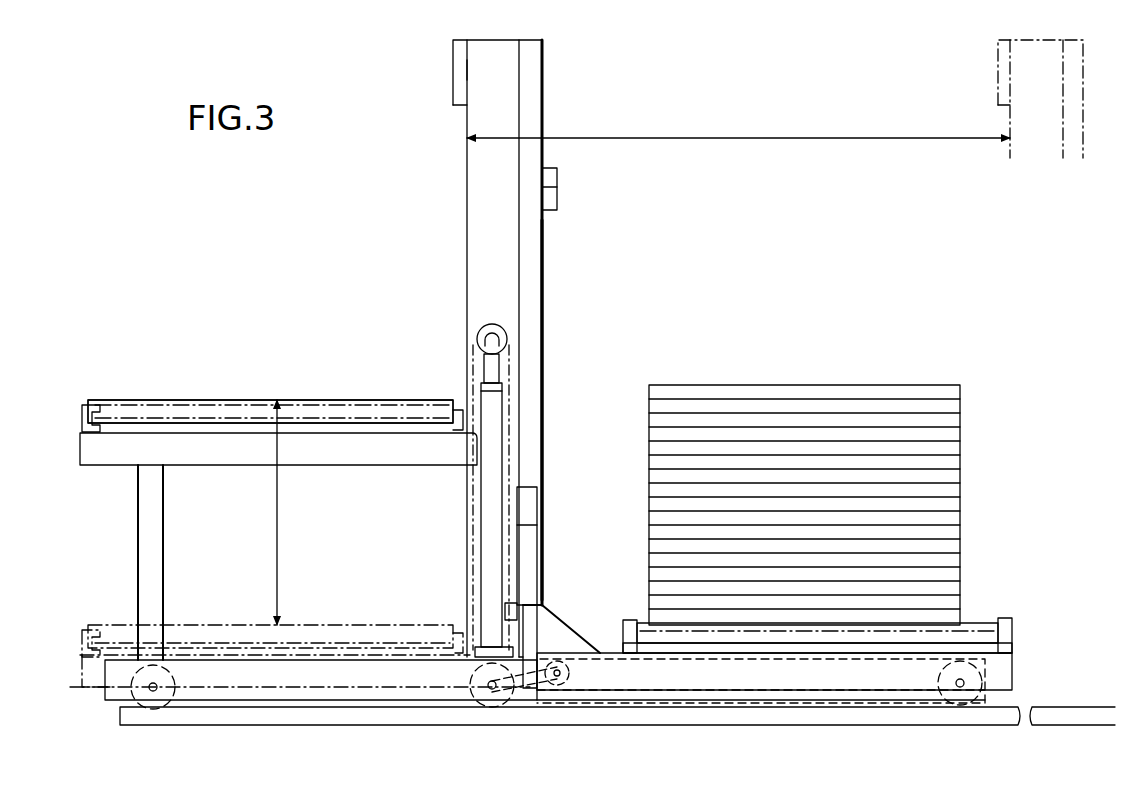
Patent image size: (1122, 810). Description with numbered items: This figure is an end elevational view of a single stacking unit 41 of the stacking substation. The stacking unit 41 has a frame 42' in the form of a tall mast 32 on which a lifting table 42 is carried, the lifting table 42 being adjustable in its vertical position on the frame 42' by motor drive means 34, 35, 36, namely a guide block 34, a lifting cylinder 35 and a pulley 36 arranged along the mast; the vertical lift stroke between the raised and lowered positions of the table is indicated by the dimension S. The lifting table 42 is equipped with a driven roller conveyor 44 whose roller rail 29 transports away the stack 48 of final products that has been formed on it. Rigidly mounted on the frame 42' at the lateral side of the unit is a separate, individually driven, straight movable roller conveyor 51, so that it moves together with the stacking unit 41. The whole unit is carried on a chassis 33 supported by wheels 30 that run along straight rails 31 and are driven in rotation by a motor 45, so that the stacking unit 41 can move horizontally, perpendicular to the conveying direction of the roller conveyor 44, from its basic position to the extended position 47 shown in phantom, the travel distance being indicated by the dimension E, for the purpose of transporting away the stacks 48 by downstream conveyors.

The roller conveyor rail 29 is at (338, 405).
The wheel 30 is at (155, 707).
The straight rail 31 is at (806, 725).
The mast 32 is at (483, 204).
The carriage chassis 33 is at (893, 672).
The motor drive means 34 is at (503, 614).
The motor drive means 35 is at (508, 376).
The motor drive means 36 is at (478, 334).
The stacking unit 41 is at (338, 271).
The lifting table 42 is at (278, 546).
The frame 42' is at (582, 410).
The driven roller conveyor 44 is at (204, 400).
The motor 45 is at (570, 674).
The extended position 47 is at (1078, 146).
The stack 48 is at (858, 385).
The movable roller conveyor 51 is at (983, 620).
The travel distance E is at (745, 138).
The lift stroke S is at (280, 536).